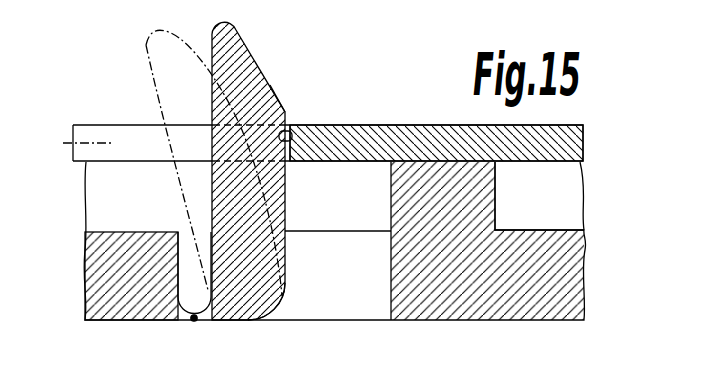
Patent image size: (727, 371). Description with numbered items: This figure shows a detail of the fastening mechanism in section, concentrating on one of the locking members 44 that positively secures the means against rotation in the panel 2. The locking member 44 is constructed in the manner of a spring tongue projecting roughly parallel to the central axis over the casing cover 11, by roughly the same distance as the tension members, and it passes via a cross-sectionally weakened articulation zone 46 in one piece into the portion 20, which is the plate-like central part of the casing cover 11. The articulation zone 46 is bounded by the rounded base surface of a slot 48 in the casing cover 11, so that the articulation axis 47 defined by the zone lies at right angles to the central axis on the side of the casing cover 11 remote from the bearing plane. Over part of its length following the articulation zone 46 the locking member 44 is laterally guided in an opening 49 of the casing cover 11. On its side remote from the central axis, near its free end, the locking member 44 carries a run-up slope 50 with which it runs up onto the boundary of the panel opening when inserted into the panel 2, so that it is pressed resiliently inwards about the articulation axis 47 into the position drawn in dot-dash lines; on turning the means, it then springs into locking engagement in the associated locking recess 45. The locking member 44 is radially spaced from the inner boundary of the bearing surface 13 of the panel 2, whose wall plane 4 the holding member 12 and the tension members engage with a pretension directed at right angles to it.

The panel 2 is at (573, 140).
The wall plane 4 is at (103, 143).
The bearing surface 13 is at (433, 125).
The casing cover 11 is at (573, 260).
The holding member 12 is at (477, 175).
The portion 20 is at (132, 241).
The slot 48 is at (190, 248).
The opening 49 is at (347, 243).
The articulation axis 47 is at (193, 318).
The run-up slope 50 is at (255, 62).
The locking member 44 is at (283, 110).
The locking recess 45 is at (292, 137).
The articulation zone 46 is at (203, 322).